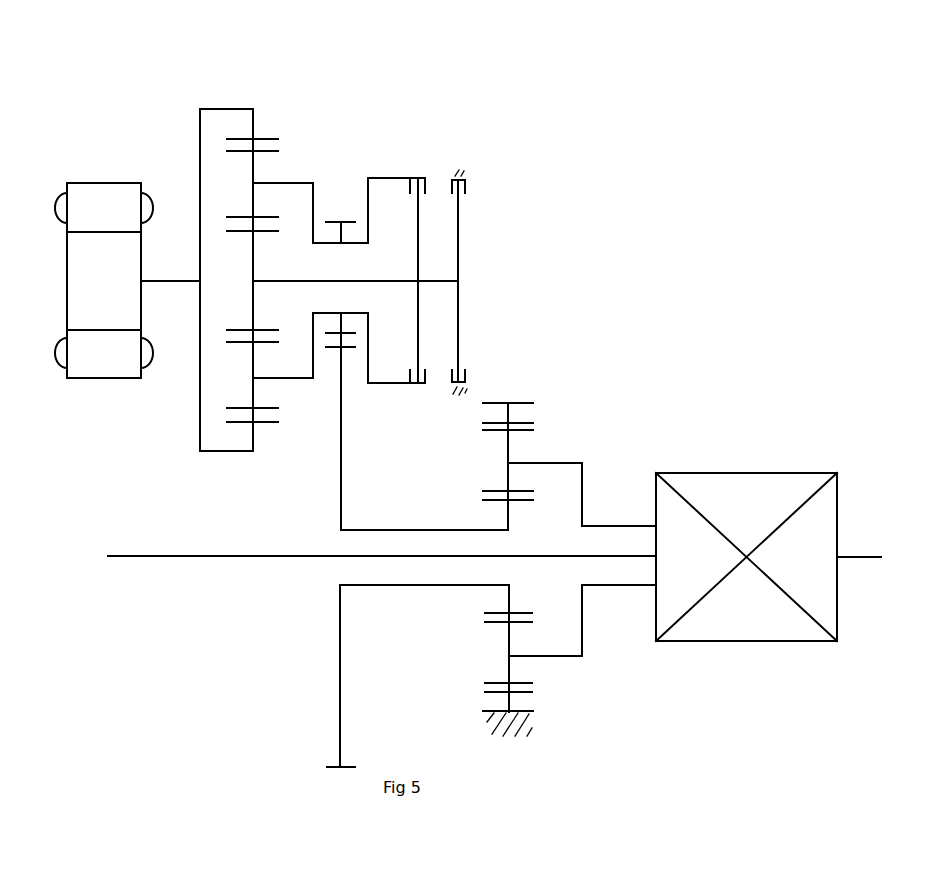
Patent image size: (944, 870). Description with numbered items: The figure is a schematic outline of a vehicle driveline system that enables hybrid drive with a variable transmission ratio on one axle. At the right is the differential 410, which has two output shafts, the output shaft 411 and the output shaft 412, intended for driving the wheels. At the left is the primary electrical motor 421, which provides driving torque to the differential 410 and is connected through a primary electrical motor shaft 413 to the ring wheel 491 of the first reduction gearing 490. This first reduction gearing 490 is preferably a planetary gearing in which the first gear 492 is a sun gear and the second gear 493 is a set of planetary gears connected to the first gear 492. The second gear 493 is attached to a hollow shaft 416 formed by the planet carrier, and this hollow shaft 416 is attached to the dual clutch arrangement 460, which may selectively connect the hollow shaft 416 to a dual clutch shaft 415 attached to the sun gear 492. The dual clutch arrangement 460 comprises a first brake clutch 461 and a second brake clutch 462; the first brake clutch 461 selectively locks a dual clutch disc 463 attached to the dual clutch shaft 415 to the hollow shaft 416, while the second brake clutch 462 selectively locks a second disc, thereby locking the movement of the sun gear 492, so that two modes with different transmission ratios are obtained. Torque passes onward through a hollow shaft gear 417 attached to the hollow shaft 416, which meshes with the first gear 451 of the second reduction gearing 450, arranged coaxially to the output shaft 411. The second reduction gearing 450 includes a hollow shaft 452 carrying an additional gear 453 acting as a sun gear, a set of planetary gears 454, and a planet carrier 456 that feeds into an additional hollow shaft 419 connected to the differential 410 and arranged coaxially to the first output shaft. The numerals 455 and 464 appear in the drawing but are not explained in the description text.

The differential 410 is at (728, 472).
The output shaft 411 is at (245, 558).
The output shaft 412 is at (863, 560).
The primary electrical motor shaft 413 is at (158, 284).
The dual clutch shaft 415 is at (353, 278).
The hollow shaft 416 is at (297, 185).
The hollow shaft gear 417 is at (345, 215).
The additional hollow shaft 419 is at (608, 585).
The primary electrical motor 421 is at (109, 182).
The second reduction gearing 450 is at (520, 390).
The first gear of the second reduction gearing 451 is at (340, 467).
The hollow shaft 452 is at (427, 585).
The additional gear of the second reduction gearing 453 is at (508, 517).
The set of planetary gears of the second reduction gearing 454 is at (509, 668).
The clutch 455 is at (508, 417).
The planet carrier of the second reduction gearing 456 is at (570, 462).
The dual clutch arrangement 460 is at (437, 166).
The first brake clutch 461 is at (418, 177).
The second brake clutch 462 is at (465, 185).
The dual clutch disc 463 is at (417, 300).
The shaft 464 is at (460, 257).
The first reduction gearing 490 is at (236, 98).
The ring wheel 491 is at (253, 137).
The first gear 492 is at (253, 302).
The second gear 493 is at (253, 388).